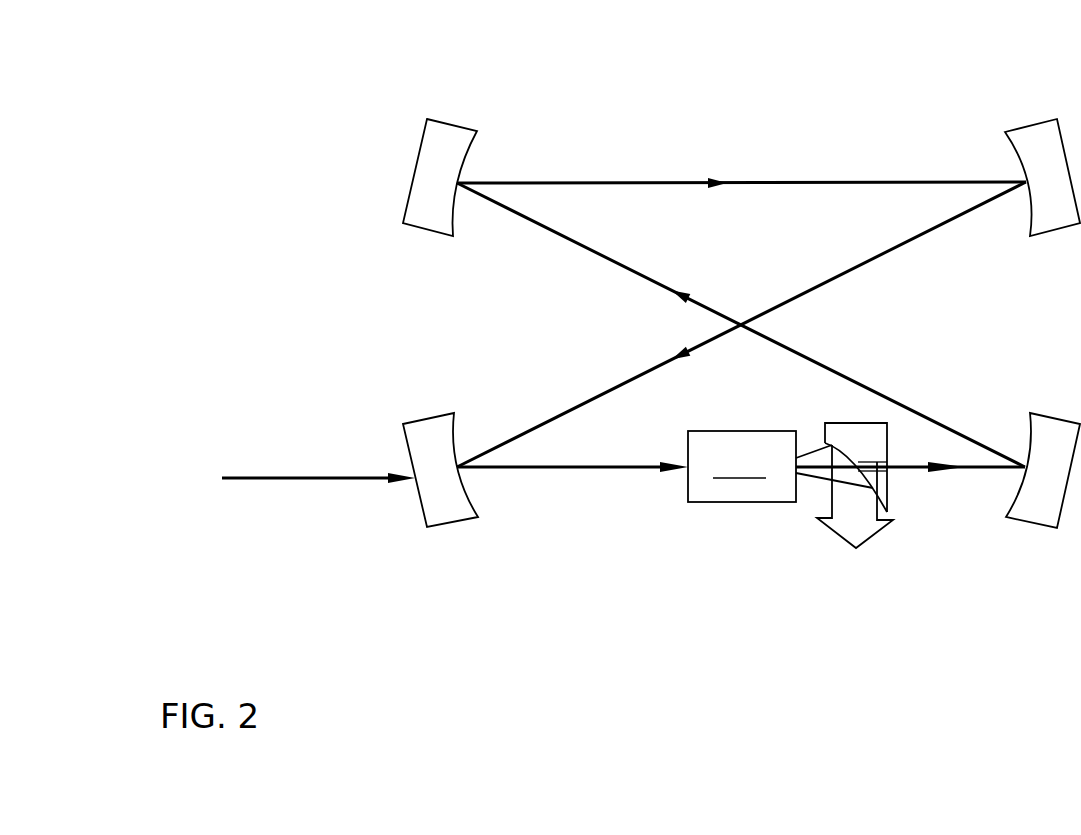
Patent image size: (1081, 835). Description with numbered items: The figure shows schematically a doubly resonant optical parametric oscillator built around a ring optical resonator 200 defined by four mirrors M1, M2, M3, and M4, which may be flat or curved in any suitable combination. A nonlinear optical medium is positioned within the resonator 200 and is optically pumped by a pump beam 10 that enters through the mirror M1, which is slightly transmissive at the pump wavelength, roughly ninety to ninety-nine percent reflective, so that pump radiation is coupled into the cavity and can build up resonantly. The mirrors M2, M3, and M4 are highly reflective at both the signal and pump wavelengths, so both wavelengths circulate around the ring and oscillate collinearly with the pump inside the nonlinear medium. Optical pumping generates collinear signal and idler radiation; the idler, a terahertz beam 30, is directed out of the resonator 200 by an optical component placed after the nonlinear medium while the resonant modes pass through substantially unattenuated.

The mirror M1 is at (442, 505).
The mirror M2 is at (1042, 502).
The mirror M3 is at (444, 147).
The mirror M4 is at (1040, 147).
The pump beam 10 is at (290, 479).
The terahertz beam 30 is at (868, 528).
The ring optical resonator 200 is at (831, 633).